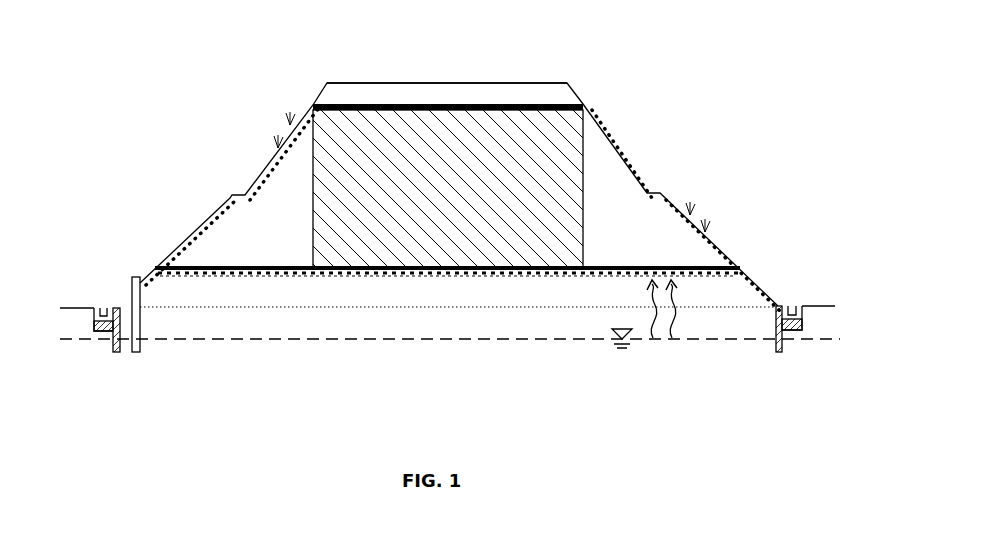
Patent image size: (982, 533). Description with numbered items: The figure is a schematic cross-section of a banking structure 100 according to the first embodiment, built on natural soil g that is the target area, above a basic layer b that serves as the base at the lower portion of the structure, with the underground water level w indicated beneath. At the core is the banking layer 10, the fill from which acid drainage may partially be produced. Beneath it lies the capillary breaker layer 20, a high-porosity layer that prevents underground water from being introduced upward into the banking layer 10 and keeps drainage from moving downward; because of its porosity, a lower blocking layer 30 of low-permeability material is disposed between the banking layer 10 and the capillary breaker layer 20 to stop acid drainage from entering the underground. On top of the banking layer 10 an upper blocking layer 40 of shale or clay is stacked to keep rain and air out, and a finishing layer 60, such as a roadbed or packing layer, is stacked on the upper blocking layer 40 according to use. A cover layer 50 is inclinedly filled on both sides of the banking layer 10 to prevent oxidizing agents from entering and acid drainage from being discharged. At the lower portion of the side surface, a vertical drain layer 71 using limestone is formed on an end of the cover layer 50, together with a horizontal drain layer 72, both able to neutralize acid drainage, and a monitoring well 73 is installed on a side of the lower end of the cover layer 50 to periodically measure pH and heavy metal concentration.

The banking structure 100 is at (122, 120).
The banking layer 10 is at (567, 147).
The capillary breaker layer 20 is at (232, 278).
The lower blocking layer 30 is at (188, 267).
The upper blocking layer 40 is at (340, 103).
The cover layer 50 is at (227, 218).
The finishing layer 60 is at (530, 83).
The vertical drain layer 71 is at (118, 306).
The horizontal drain layer 72 is at (103, 333).
The monitoring well 73 is at (138, 278).
The basic layer b is at (337, 297).
The natural soil g is at (383, 330).
The underground water level w is at (497, 340).